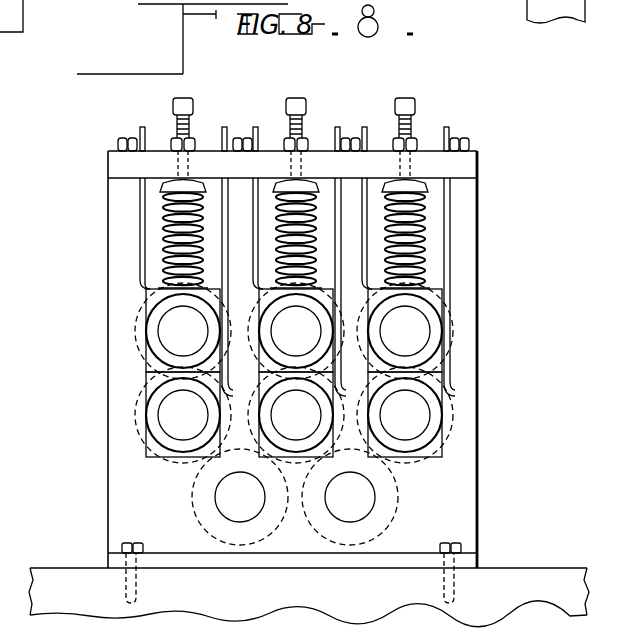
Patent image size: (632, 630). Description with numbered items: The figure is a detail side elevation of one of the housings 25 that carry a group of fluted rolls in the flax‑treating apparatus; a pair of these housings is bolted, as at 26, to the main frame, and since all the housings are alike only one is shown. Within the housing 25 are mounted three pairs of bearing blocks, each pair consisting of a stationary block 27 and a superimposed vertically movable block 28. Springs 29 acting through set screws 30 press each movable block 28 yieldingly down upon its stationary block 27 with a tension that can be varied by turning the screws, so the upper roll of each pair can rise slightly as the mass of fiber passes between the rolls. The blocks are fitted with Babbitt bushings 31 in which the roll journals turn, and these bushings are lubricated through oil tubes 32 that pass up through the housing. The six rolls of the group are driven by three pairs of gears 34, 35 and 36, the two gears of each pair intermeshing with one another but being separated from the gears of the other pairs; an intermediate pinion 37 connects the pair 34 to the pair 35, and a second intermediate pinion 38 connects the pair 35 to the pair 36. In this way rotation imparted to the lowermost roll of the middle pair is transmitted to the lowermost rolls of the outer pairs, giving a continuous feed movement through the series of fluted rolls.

The housing 25 is at (472, 438).
The bolts 26 is at (122, 547).
The stationary bearing blocks 27 is at (145, 391).
The vertically movable bearing blocks 28 is at (145, 363).
The springs 29 is at (163, 248).
The set screws 30 is at (290, 107).
The Babbitt bushings 31 is at (163, 426).
The oil tubes 32 is at (228, 134).
The first pair of gears 34 is at (137, 326).
The second pair of gears 35 is at (247, 374).
The third pair of gears 36 is at (357, 374).
The intermediate pinion 37 is at (192, 508).
The second intermediate pinion 38 is at (388, 513).